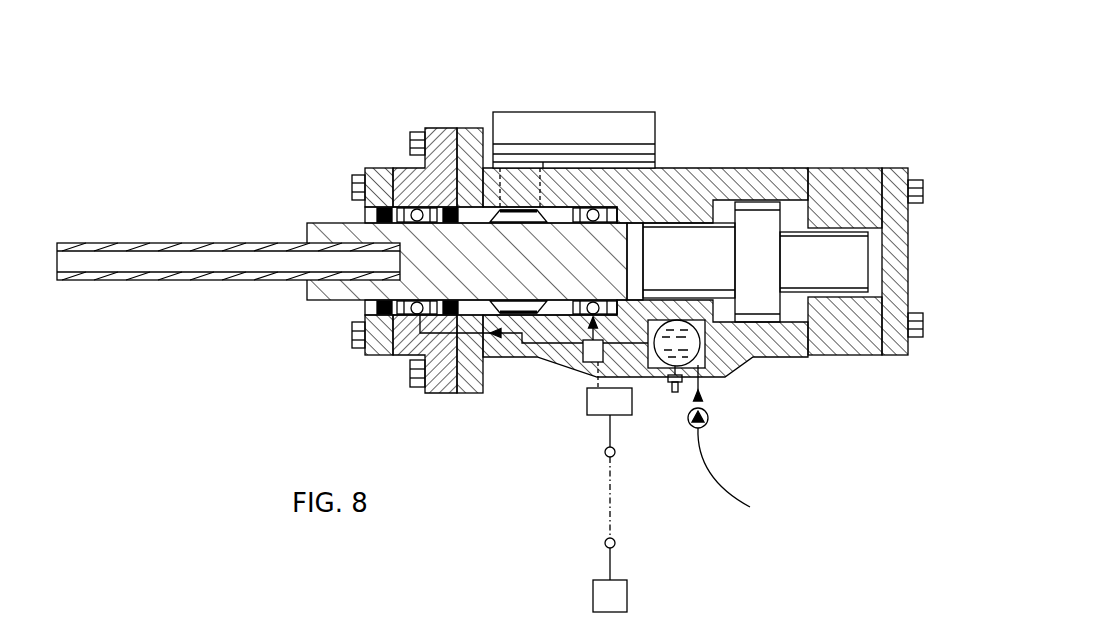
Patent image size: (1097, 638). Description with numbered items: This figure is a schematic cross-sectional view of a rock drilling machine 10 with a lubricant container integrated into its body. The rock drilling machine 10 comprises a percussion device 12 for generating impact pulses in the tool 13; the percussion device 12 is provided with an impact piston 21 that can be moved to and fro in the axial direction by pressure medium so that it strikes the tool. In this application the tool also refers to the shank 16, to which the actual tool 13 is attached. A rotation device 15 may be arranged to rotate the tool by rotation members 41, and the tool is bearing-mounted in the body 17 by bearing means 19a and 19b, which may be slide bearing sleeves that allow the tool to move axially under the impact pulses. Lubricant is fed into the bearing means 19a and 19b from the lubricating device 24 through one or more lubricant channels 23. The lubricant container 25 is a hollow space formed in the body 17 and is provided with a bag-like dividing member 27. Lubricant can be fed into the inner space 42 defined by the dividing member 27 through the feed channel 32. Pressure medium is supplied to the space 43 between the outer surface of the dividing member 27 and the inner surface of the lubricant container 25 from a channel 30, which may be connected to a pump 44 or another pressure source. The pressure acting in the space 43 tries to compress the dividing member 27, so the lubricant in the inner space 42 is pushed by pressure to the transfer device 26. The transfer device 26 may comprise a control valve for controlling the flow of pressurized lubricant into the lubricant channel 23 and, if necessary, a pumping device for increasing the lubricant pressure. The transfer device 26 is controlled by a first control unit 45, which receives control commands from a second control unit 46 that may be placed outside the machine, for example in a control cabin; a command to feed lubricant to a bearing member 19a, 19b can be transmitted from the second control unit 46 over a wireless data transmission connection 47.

The rock drilling machine 10 is at (490, 240).
The percussion device 12 is at (790, 207).
The tool 13 is at (170, 245).
The rotation device 15 is at (540, 123).
The shank 16 is at (327, 233).
The body 17 is at (678, 188).
The first bearing sleeve 19a is at (402, 332).
The second bearing sleeve 19b is at (613, 200).
The impact piston 21 is at (708, 276).
The lubricant channel 23 is at (533, 352).
The lubricating device 24 is at (742, 467).
The lubricant container 25 is at (725, 337).
The transfer device 26 is at (573, 357).
The dividing member 27 is at (743, 365).
The channel 30 is at (703, 387).
The feed channel 32 is at (673, 392).
The rotation members 41 is at (507, 217).
The inner space 42 is at (690, 337).
The space 43 is at (647, 370).
The pump 44 is at (739, 483).
The first control unit 45 is at (600, 404).
The second control unit 46 is at (603, 597).
The wireless data transmission connection 47 is at (615, 512).